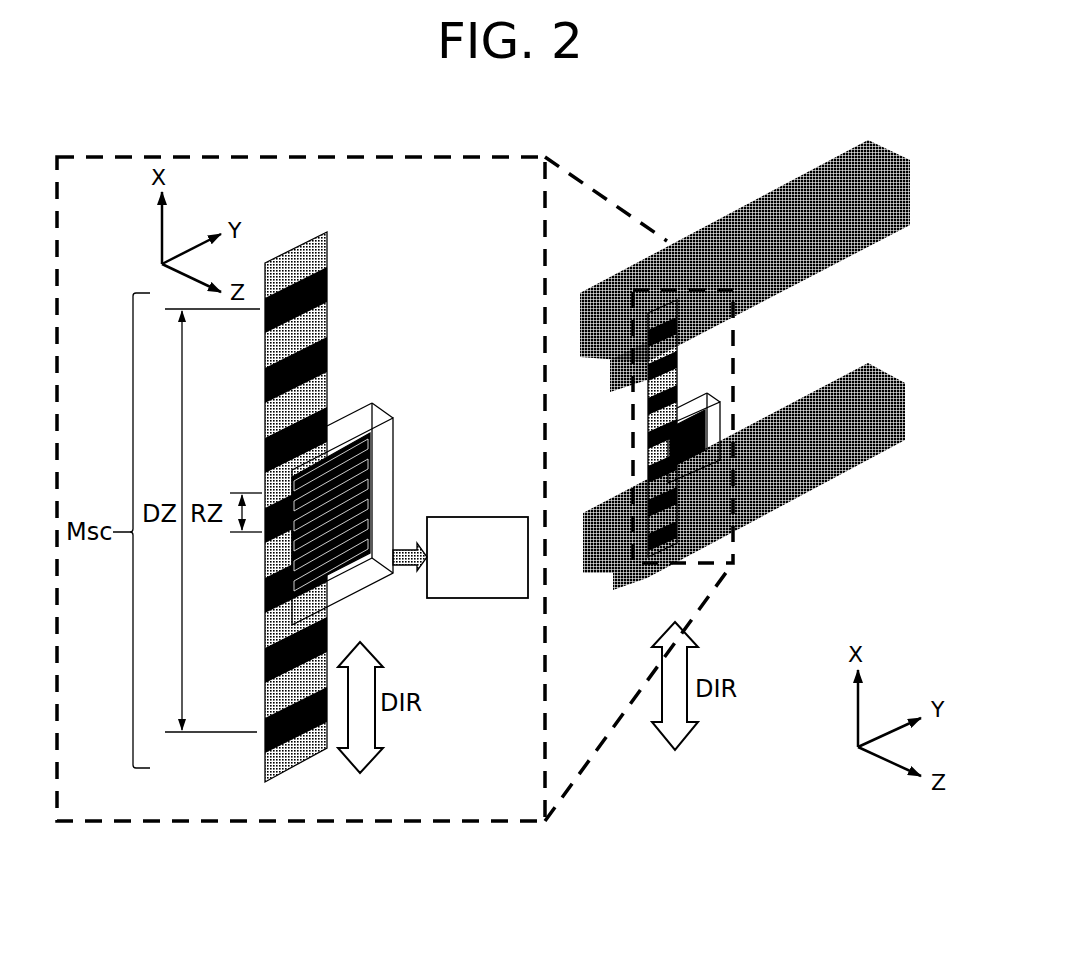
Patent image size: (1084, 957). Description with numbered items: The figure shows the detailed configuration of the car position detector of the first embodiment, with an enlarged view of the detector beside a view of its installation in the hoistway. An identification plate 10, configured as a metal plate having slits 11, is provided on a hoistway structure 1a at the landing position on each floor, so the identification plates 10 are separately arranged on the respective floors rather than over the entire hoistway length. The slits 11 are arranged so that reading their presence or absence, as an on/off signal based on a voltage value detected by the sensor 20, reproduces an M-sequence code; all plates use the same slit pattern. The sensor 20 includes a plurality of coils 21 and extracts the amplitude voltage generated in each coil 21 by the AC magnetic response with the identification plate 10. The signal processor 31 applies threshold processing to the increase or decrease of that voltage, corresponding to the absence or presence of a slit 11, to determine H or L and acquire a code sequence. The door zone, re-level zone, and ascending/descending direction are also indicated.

The hoistway structure 1a is at (752, 202).
The identification plate 10 is at (308, 257).
The slits 11 is at (338, 510).
The sensor 20 is at (375, 423).
The coils 21 is at (372, 480).
The signal processor 31 is at (447, 517).